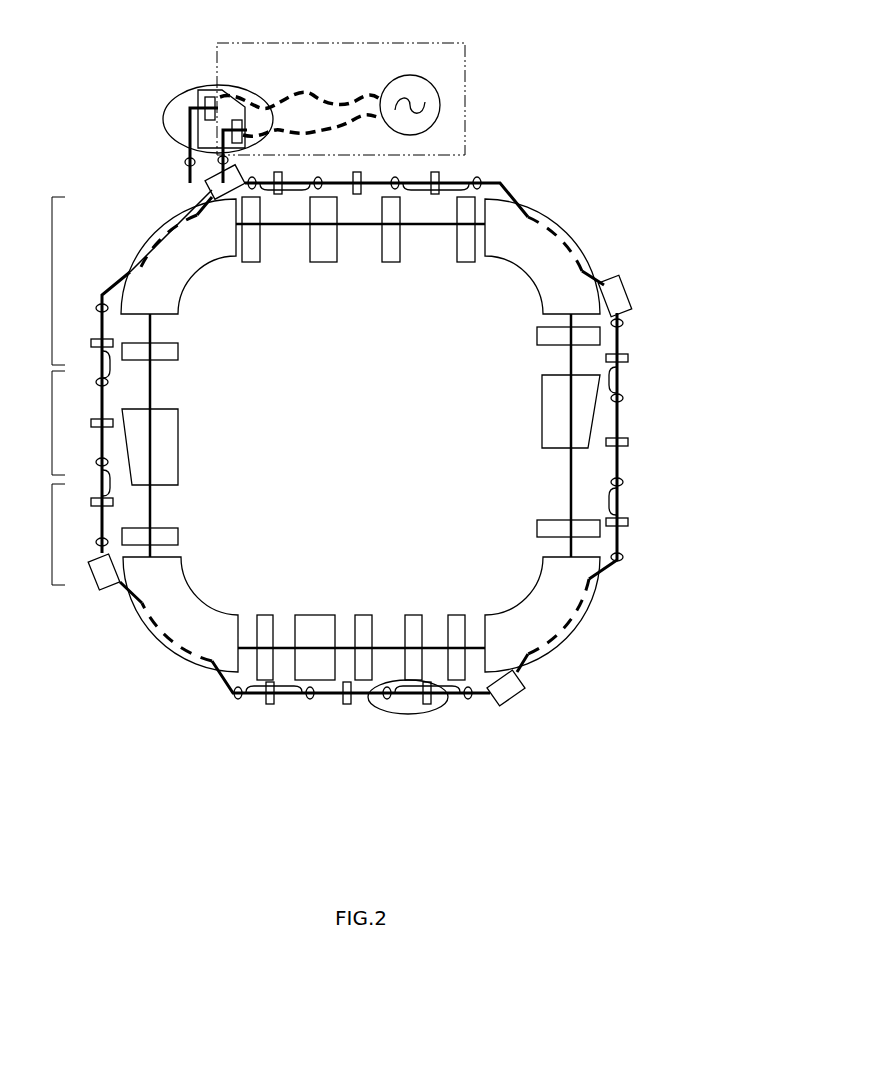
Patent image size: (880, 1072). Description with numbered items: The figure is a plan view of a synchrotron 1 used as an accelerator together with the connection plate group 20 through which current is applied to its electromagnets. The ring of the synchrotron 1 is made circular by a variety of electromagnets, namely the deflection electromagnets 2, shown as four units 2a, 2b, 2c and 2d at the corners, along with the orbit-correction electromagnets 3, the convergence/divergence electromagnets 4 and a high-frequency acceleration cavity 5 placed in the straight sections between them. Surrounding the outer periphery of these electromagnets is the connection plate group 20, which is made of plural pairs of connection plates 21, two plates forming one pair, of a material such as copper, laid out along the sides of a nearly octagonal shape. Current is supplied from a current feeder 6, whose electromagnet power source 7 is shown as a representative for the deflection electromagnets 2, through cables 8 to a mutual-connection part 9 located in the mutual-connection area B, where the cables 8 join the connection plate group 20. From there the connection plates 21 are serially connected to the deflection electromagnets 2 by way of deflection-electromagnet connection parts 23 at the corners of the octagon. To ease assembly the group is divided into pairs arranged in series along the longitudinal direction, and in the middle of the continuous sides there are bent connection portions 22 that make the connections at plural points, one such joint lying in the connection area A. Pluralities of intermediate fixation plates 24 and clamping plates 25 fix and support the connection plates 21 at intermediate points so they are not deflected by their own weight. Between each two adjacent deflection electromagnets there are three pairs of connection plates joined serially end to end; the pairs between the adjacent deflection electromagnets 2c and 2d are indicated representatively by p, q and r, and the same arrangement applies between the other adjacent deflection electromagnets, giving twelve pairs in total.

The synchrotron 1 is at (275, 380).
The deflection electromagnet 2 is at (393, 433).
The deflection electromagnet 2a is at (523, 277).
The deflection electromagnet 2b is at (513, 603).
The deflection electromagnet 2c is at (188, 585).
The deflection electromagnet 2d is at (197, 273).
The orbit-correction electromagnet 3 is at (363, 615).
The convergence/divergence electromagnet 4 is at (265, 617).
The high-frequency acceleration cavity 5 is at (315, 615).
The current feeder 6 is at (470, 83).
The electromagnet power source 7 is at (442, 105).
The cables 8 is at (287, 93).
The mutual-connection part 9 is at (203, 100).
The connection plate group 20 is at (535, 190).
The connection plate 21 is at (610, 583).
The bent connection portion 22 is at (608, 503).
The deflection-electromagnet connection part 23 is at (213, 190).
The intermediate fixation plate 24 is at (628, 357).
The clamping plate 25 is at (623, 323).
The connection area A is at (383, 713).
The mutual-connection area B is at (163, 120).
The pair of connection plates p is at (35, 534).
The pair of connection plates q is at (35, 423).
The pair of connection plates r is at (38, 281).